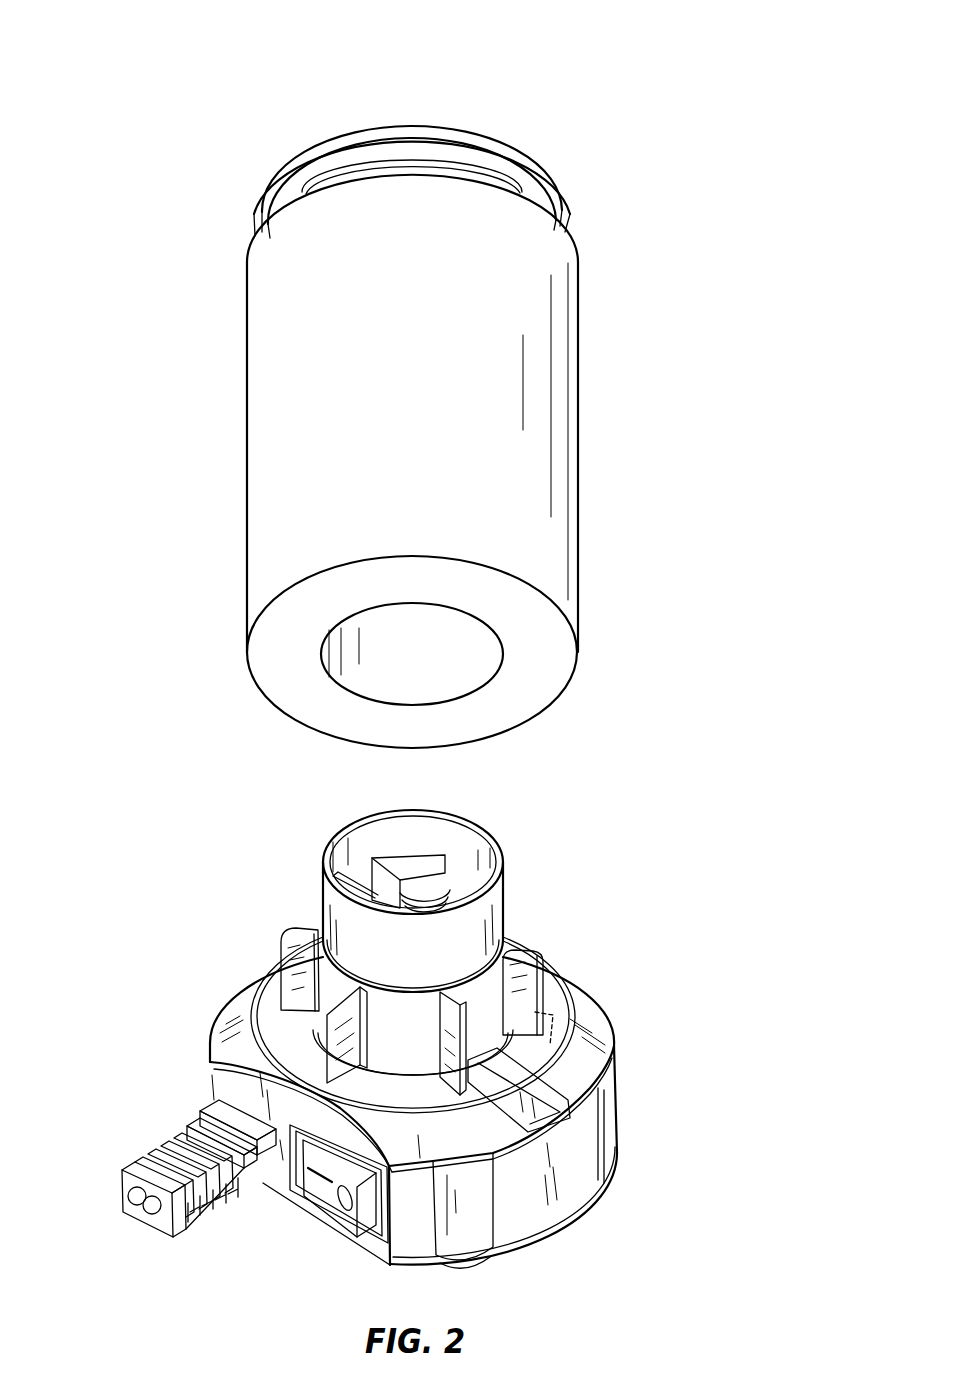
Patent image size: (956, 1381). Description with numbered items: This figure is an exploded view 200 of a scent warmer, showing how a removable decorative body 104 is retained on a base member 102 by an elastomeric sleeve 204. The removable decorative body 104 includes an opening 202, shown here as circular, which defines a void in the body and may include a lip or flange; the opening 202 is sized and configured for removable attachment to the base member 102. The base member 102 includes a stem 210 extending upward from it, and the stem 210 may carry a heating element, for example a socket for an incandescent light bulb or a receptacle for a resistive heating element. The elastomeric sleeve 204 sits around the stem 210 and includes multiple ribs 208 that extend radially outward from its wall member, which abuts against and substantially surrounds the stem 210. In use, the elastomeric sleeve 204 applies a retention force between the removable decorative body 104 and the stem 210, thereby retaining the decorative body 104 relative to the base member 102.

The lighting assembly 200 is at (700, 98).
The removable decorative body 104 is at (267, 408).
The opening 202 is at (498, 679).
The base member 102 is at (225, 1055).
The elastomeric sleeve 204 is at (553, 958).
The ribs 208 is at (343, 1010).
The stem 210 is at (511, 869).